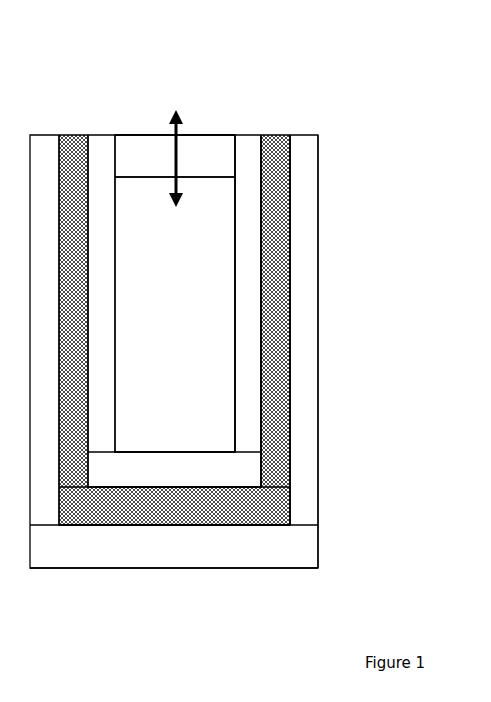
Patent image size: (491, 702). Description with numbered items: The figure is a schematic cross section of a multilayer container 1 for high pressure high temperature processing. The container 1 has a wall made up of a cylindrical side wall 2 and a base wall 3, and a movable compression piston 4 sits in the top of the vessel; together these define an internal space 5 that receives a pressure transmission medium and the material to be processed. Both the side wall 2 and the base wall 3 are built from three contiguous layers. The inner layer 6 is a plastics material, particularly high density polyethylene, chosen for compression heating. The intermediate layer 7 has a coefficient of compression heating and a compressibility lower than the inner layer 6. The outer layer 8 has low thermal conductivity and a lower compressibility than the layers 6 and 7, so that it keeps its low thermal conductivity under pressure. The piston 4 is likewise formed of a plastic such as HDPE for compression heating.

The container 1 is at (255, 289).
The cylindrical side wall 2 is at (313, 113).
The base wall 3 is at (332, 443).
The movable compression piston 4 is at (137, 152).
The internal space 5 is at (181, 322).
The inner layer 6 is at (248, 292).
The intermediate layer 7 is at (280, 318).
The outer layer 8 is at (304, 356).